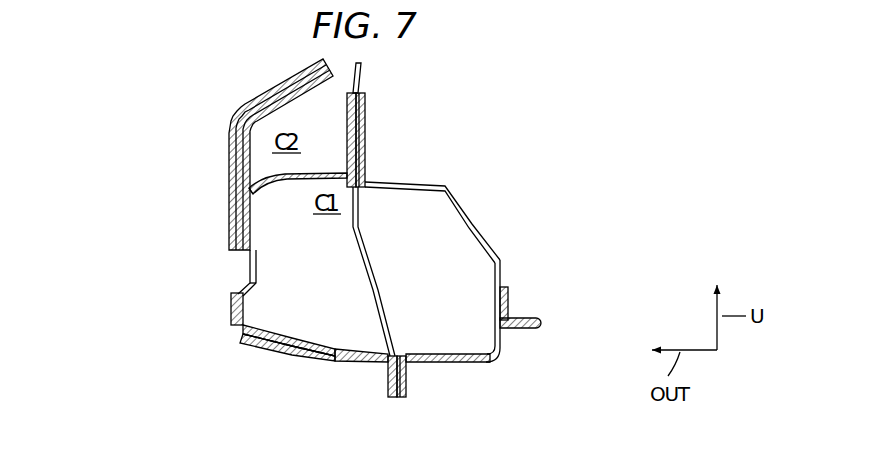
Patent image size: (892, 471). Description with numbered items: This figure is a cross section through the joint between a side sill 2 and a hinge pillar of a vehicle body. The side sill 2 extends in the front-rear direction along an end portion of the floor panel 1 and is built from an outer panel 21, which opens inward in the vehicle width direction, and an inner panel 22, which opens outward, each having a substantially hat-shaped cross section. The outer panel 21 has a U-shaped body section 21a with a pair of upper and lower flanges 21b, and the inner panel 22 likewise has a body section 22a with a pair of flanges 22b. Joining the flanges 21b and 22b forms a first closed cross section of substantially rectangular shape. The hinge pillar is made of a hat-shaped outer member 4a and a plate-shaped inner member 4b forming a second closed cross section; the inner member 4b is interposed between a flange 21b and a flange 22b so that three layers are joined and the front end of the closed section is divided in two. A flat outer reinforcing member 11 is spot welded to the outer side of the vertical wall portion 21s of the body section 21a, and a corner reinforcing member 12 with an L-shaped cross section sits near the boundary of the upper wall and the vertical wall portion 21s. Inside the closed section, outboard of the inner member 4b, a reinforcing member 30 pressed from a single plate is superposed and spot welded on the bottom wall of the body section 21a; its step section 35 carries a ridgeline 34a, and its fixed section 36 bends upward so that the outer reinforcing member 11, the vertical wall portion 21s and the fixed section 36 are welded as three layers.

The floor panel 1 is at (530, 321).
The side sill 2 is at (297, 368).
The outer member 4a is at (237, 226).
The inner member 4b is at (359, 237).
The outer reinforcing member 11 is at (241, 249).
The corner reinforcing member 12 is at (228, 171).
The outer panel 21 is at (236, 338).
The body section 21a is at (259, 347).
The flange 21b is at (347, 140).
The vertical wall portion 21s is at (259, 248).
The inner panel 22 is at (450, 186).
The body section 22a is at (476, 228).
The flange 22b is at (366, 136).
The reinforcing member 30 is at (347, 343).
The reinforcement wall 34a is at (282, 327).
The step section 35 is at (292, 338).
The fixed section 36 is at (268, 290).